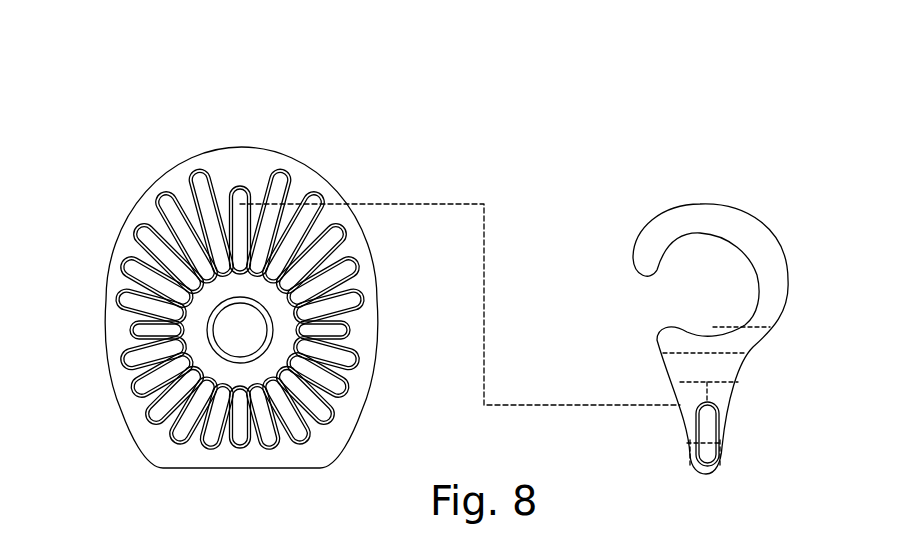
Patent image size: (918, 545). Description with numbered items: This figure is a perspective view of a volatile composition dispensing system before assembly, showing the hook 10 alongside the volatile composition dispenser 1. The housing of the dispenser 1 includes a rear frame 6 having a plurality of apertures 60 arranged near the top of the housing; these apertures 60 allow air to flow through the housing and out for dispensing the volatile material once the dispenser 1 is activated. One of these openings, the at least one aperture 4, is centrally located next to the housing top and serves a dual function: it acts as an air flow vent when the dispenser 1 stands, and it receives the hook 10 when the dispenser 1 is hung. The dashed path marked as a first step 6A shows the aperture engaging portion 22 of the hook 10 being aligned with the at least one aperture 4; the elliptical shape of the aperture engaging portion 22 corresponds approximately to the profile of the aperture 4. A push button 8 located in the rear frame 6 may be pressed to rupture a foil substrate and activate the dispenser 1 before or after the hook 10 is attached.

The volatile composition dispenser 1 is at (215, 270).
The at least one aperture 4 is at (238, 192).
The plurality of apertures 60 is at (190, 188).
The push button 8 is at (243, 338).
The rear frame 6 is at (157, 450).
The first step 6A is at (495, 253).
The hook 10 is at (743, 271).
The aperture engaging portion 22 is at (727, 426).